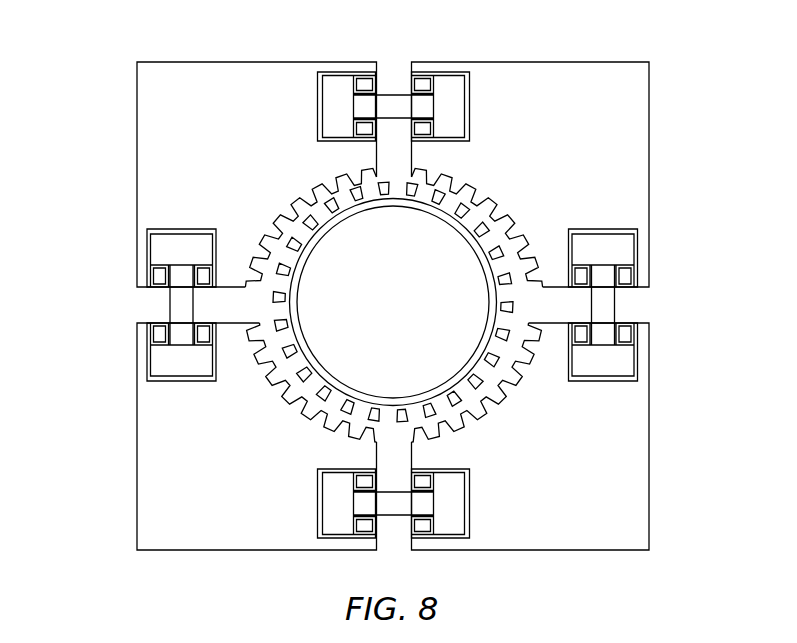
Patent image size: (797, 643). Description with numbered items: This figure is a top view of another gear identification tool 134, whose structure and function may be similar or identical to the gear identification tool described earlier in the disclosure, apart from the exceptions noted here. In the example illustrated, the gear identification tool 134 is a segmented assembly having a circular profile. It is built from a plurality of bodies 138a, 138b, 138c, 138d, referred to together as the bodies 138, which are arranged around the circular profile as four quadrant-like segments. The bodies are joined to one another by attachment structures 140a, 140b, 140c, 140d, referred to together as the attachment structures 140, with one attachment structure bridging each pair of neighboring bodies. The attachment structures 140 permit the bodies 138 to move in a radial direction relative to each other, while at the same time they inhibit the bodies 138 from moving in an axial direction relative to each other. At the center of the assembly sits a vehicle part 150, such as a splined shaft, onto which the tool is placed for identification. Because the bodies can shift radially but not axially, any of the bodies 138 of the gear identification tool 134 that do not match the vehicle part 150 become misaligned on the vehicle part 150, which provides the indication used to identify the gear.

The gear identification tool 134 is at (686, 106).
The bodies 138 is at (92, 197).
The body 138a is at (617, 173).
The body 138b is at (613, 438).
The body 138c is at (190, 488).
The body 138d is at (188, 125).
The attachment structures 140 is at (642, 312).
The attachment structure 140a is at (389, 101).
The attachment structure 140b is at (615, 298).
The attachment structure 140c is at (388, 526).
The attachment structure 140d is at (166, 306).
The vehicle part 150 is at (276, 357).